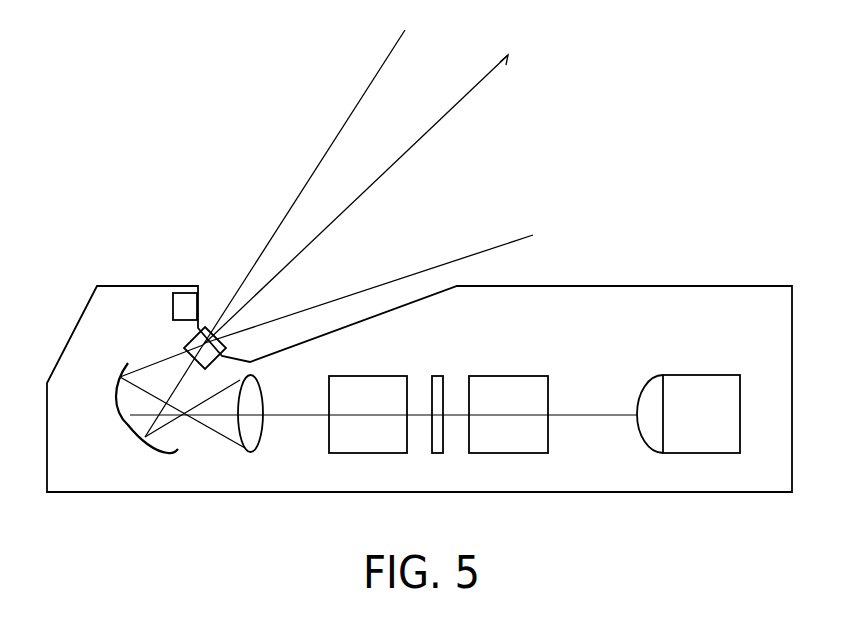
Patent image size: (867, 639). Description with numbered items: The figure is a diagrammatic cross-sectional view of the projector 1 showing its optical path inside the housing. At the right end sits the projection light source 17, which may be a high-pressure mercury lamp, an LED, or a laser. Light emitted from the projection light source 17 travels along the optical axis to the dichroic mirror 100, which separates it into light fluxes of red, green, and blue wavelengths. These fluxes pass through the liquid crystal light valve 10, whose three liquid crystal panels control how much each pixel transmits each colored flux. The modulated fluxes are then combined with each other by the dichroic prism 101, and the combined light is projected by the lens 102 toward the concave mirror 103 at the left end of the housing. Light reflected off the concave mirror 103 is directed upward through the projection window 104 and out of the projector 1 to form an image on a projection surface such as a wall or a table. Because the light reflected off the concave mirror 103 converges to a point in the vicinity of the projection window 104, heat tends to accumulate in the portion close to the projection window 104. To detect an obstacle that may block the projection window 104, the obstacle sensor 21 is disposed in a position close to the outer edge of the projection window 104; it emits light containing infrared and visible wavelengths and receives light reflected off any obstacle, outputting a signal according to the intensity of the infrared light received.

The projector 1 is at (612, 286).
The obstacle sensor 21 is at (180, 282).
The projection window 104 is at (190, 335).
The concave mirror 103 is at (172, 455).
The lens 102 is at (258, 452).
The dichroic prism 101 is at (359, 376).
The liquid crystal light valve 10 is at (439, 376).
The dichroic mirror 100 is at (518, 376).
The projection light source 17 is at (677, 375).